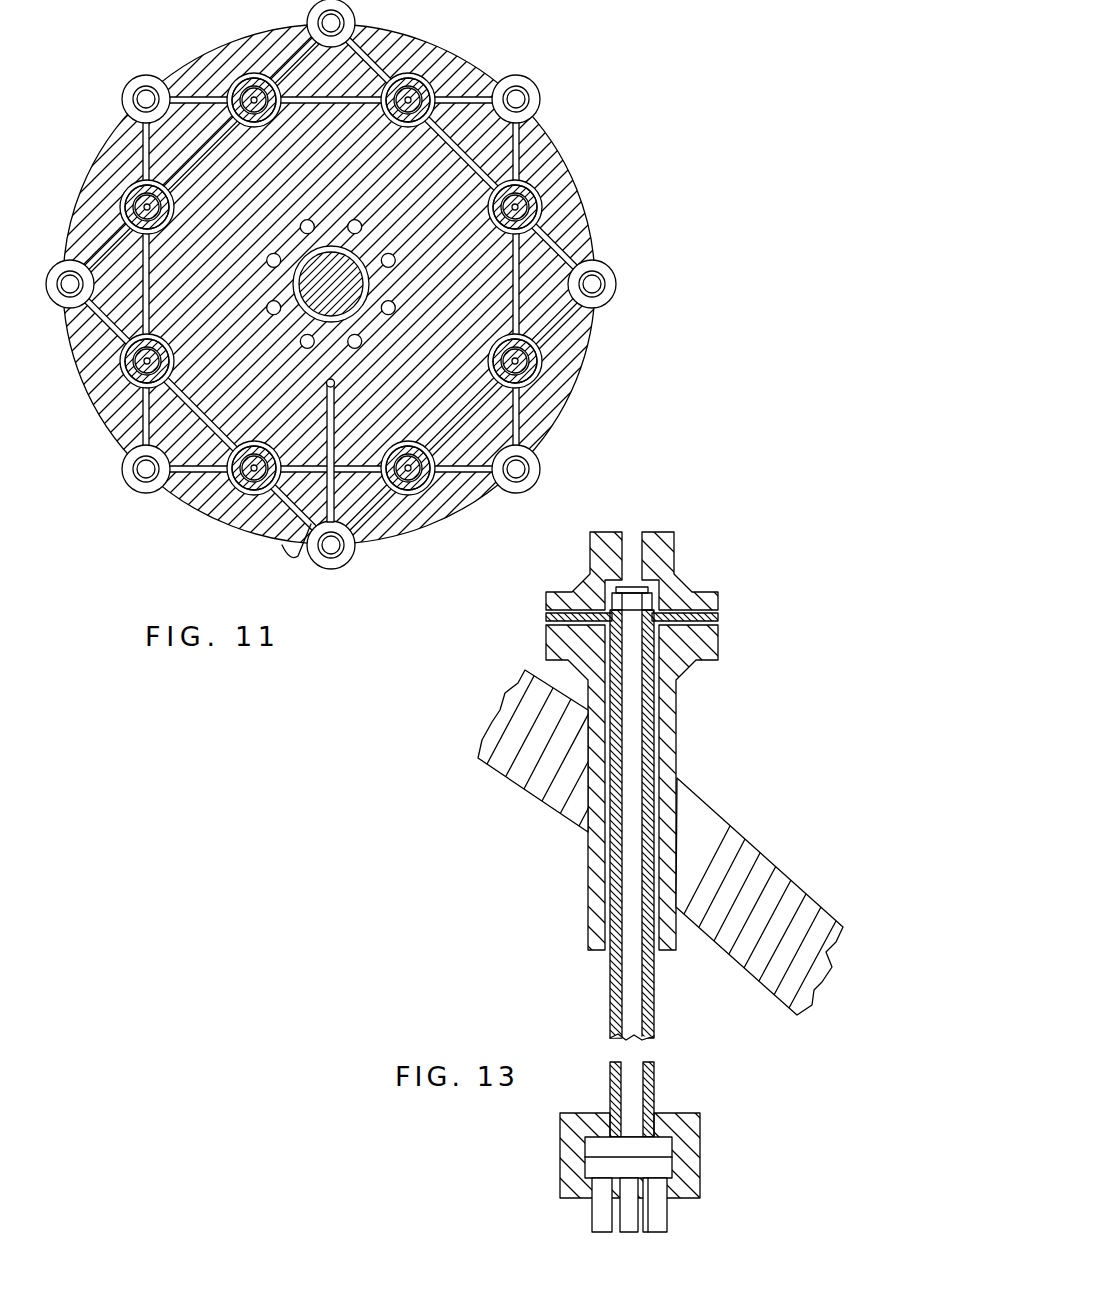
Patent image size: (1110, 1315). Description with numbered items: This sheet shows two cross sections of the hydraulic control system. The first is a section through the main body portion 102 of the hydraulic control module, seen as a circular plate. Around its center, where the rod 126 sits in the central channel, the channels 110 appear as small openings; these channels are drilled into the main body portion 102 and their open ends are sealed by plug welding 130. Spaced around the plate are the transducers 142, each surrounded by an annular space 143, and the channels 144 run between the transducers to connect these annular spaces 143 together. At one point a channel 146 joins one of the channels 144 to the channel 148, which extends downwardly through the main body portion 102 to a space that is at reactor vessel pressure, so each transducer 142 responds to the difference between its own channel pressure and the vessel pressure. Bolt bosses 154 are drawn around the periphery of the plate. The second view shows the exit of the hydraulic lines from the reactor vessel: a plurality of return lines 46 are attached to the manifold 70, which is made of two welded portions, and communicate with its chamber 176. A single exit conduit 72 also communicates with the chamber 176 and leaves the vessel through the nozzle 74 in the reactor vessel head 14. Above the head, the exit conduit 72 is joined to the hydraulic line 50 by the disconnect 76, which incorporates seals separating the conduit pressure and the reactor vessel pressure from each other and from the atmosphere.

In FIG. 11, the main body portion 102 is at (552, 178).
In FIG. 11, the channels 110 is at (361, 226).
In FIG. 11, the rod 126 is at (350, 290).
In FIG. 11, the plug welding 130 is at (300, 550).
In FIG. 11, the transducers 142 is at (542, 352).
In FIG. 11, the annular spaces 143 is at (536, 366).
In FIG. 11, the channels 144 is at (208, 148).
In FIG. 11, the channel 146 is at (336, 410).
In FIG. 11, the channel 148 is at (338, 384).
In FIG. 11, the bolt hole boss 154 is at (607, 272).
In FIG. 13, the reactor vessel head 14 is at (740, 840).
In FIG. 13, the return lines 46 is at (592, 1222).
In FIG. 13, the hydraulic line 50 is at (665, 553).
In FIG. 13, the manifold 70 is at (692, 1125).
In FIG. 13, the exit conduit 72 is at (652, 1082).
In FIG. 13, the nozzle 74 is at (660, 745).
In FIG. 13, the disconnect 76 is at (716, 600).
In FIG. 13, the chamber 176 is at (655, 1150).